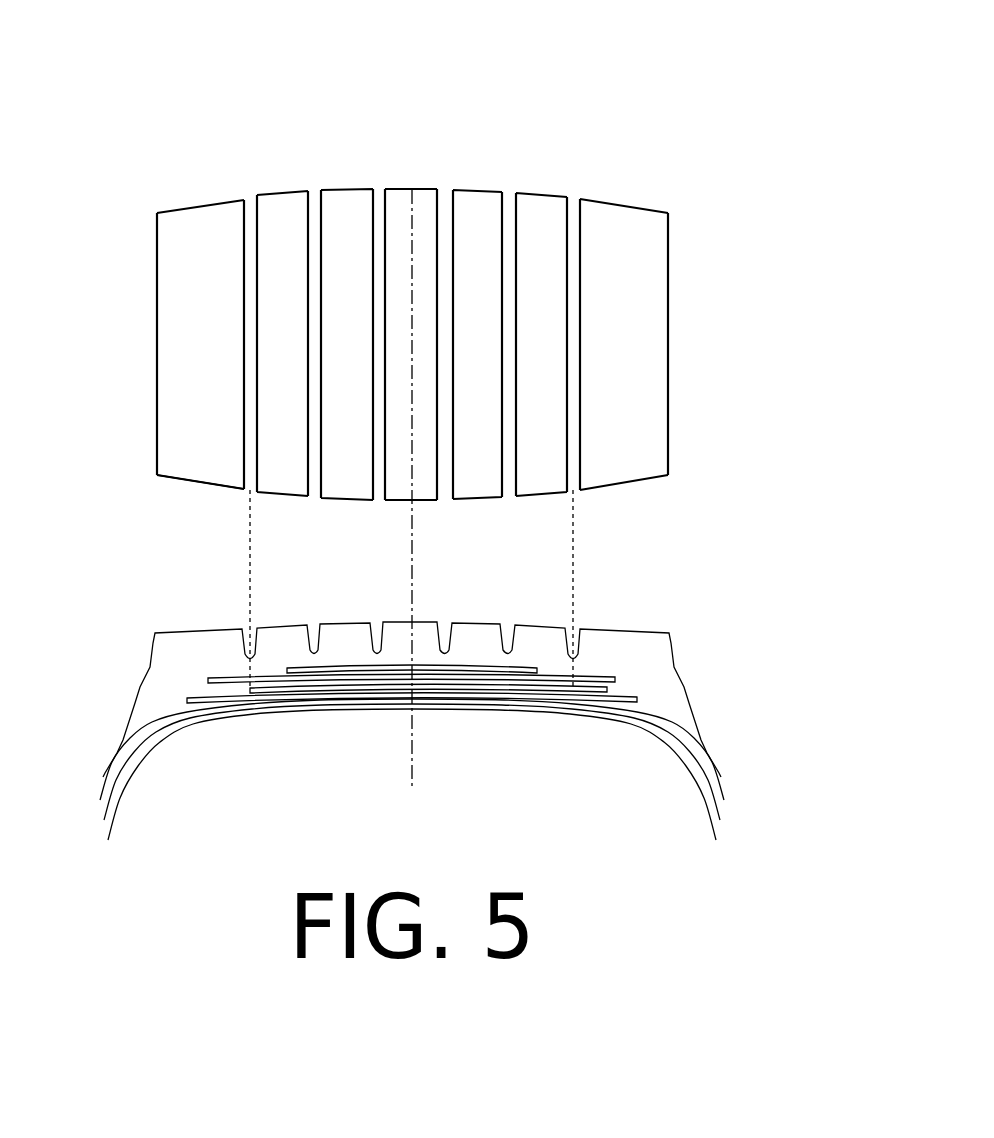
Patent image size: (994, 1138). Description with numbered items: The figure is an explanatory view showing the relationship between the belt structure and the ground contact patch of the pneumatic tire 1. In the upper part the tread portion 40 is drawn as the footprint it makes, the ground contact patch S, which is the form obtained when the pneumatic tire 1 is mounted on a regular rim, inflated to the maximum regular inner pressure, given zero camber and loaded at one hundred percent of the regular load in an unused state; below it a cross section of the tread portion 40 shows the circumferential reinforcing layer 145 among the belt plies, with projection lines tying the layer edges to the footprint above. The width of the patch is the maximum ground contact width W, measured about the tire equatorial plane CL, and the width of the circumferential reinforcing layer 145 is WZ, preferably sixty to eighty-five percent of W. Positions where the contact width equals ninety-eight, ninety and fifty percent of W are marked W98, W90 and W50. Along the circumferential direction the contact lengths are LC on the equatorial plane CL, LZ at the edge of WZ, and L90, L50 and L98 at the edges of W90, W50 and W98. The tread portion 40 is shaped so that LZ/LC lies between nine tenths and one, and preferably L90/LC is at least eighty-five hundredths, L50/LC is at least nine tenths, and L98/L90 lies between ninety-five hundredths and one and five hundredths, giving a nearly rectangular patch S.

The pneumatic tire 1 is at (130, 161).
The tread portion 40 is at (162, 497).
The circumferential reinforcing layer 145 is at (478, 680).
The ground contact patch S is at (185, 463).
The tire equatorial plane CL is at (412, 503).
The maximum ground contact width W is at (669, 213).
The ninety-eight percent ground contact width position W98 is at (663, 214).
The ninety percent ground contact width position W90 is at (653, 212).
The circumferential reinforcing layer width WZ is at (575, 198).
The fifty percent ground contact width position W50 is at (510, 192).
The ground contact length at ninety percent width L90 is at (157, 212).
The ground contact length at ninety-eight percent width L98 is at (157, 216).
The ground contact length at reinforcing layer edge LZ is at (580, 198).
The ground contact length at fifty percent width L50 is at (385, 190).
The ground contact length on equatorial plane LC is at (375, 500).